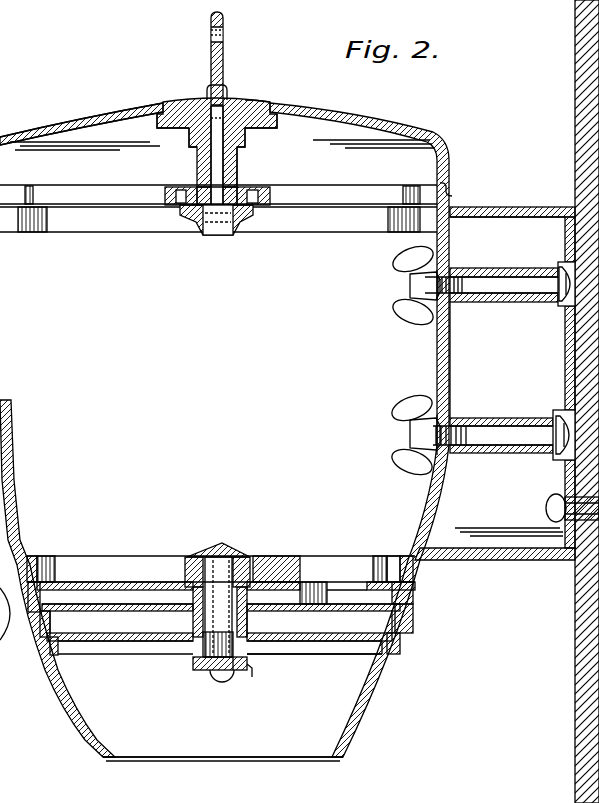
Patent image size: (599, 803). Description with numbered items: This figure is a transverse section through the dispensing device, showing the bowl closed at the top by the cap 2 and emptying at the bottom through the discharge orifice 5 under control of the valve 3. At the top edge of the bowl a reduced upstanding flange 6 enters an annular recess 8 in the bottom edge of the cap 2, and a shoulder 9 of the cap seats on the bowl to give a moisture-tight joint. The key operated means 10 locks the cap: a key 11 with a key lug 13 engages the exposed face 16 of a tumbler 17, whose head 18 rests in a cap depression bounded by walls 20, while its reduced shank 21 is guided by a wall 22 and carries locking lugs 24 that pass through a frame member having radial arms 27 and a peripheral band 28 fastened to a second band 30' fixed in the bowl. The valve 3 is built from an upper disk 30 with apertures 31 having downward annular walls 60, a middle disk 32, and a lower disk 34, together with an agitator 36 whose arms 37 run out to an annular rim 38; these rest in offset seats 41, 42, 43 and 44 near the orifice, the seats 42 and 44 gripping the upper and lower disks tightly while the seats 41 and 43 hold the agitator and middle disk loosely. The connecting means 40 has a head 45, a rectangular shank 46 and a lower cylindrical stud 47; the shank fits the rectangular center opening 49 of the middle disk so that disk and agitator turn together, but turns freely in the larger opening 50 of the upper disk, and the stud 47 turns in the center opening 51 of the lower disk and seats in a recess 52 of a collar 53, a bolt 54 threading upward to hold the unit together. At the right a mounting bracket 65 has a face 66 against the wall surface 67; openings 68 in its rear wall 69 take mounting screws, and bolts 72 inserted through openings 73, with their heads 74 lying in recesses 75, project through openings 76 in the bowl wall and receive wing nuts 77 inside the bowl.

The cap 2 is at (366, 130).
The valve 3 is at (80, 528).
The discharge orifice 5 is at (288, 750).
The upstanding flange 6 is at (0, 168).
The annular recess 8 is at (0, 184).
The shoulder 9 is at (452, 186).
The key operated means 10 is at (222, 157).
The key 11 is at (224, 16).
The key lug 13 is at (228, 88).
The exposed face 16 is at (246, 99).
The tumbler 17 is at (208, 160).
The head 18 is at (271, 103).
The walls 20 is at (158, 127).
The reduced shank 21 is at (240, 172).
The wall 22 is at (189, 145).
The locking lugs 24 is at (200, 220).
The radial arms 27 is at (354, 190).
The peripheral band 28 is at (428, 190).
The upper disk 30 is at (218, 406).
The second band 30' is at (50, 238).
The apertures of upper disk 31 is at (341, 585).
The middle disk 32 is at (410, 606).
The lower disk 34 is at (405, 636).
The agitator 36 is at (270, 570).
The arms 37 is at (117, 560).
The annular rim 38 is at (390, 565).
The connecting means 40 is at (205, 545).
The seat 41 is at (418, 575).
The seat 42 is at (420, 592).
The seat 43 is at (415, 626).
The seat 44 is at (392, 650).
The head 45 is at (232, 547).
The rectangular shank 46 is at (192, 622).
The lower cylindrical stud 47 is at (195, 668).
The center opening 49 is at (192, 652).
The opening 50 is at (267, 620).
The center opening 51 is at (285, 652).
The recess 52 is at (247, 662).
The collar 53 is at (249, 677).
The bolt 54 is at (220, 680).
The annular wall 60 is at (340, 620).
The mounting bracket 65 is at (520, 207).
The face 66 is at (568, 230).
The surface 67 is at (575, 131).
The openings 68 is at (568, 486).
The rear wall 69 is at (570, 350).
The bolts 72 is at (484, 277).
The openings 73 is at (519, 302).
The heads 74 is at (560, 282).
The recesses 75 is at (562, 305).
The openings 76 is at (452, 318).
The wing nuts 77 is at (400, 268).